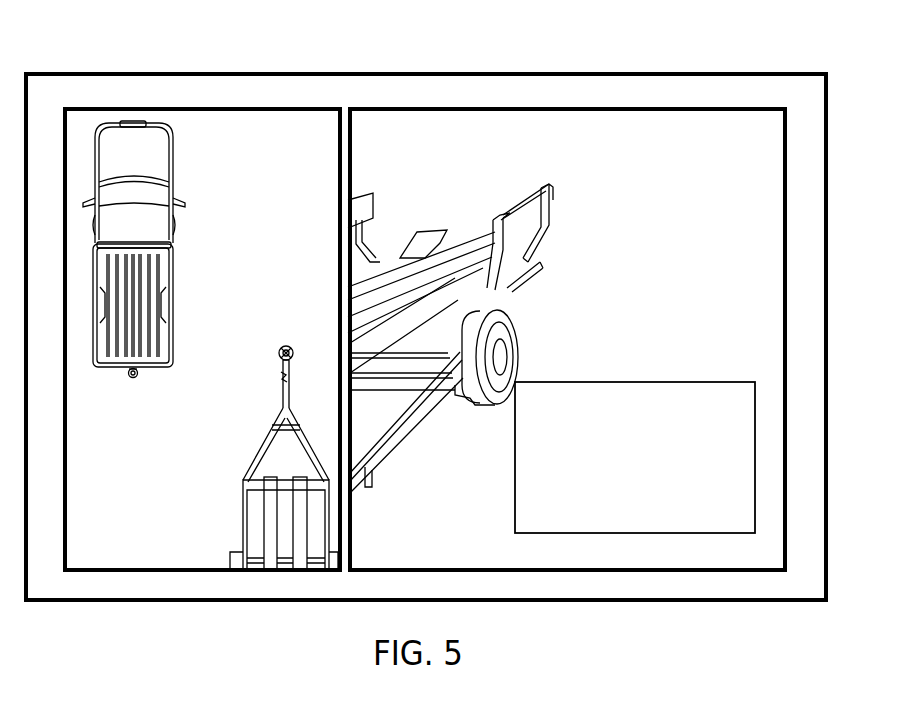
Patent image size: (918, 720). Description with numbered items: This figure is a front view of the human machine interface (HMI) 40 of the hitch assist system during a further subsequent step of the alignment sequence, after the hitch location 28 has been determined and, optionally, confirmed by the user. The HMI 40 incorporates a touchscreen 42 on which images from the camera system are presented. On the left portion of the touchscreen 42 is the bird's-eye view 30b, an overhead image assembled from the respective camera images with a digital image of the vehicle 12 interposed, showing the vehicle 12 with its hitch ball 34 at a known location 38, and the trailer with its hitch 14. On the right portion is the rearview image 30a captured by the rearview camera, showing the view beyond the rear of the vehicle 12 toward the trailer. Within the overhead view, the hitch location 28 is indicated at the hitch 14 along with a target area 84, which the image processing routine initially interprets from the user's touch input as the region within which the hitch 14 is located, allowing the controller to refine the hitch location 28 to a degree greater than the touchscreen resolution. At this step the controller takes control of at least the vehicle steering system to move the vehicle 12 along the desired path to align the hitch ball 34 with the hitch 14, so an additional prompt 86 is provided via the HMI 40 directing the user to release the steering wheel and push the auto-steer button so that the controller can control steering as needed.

The human machine interface 40 is at (630, 50).
The touchscreen 42 is at (802, 249).
The rearview image 30a is at (478, 138).
The bird's-eye view 30b is at (238, 140).
The vehicle 12 is at (178, 269).
The known location of the vehicle hitch ball 38 is at (128, 376).
The hitch ball 34 is at (137, 378).
The hitch location 28 is at (274, 344).
The target area 84 is at (292, 349).
The hitch 14 is at (280, 358).
The prompt 86 is at (634, 381).